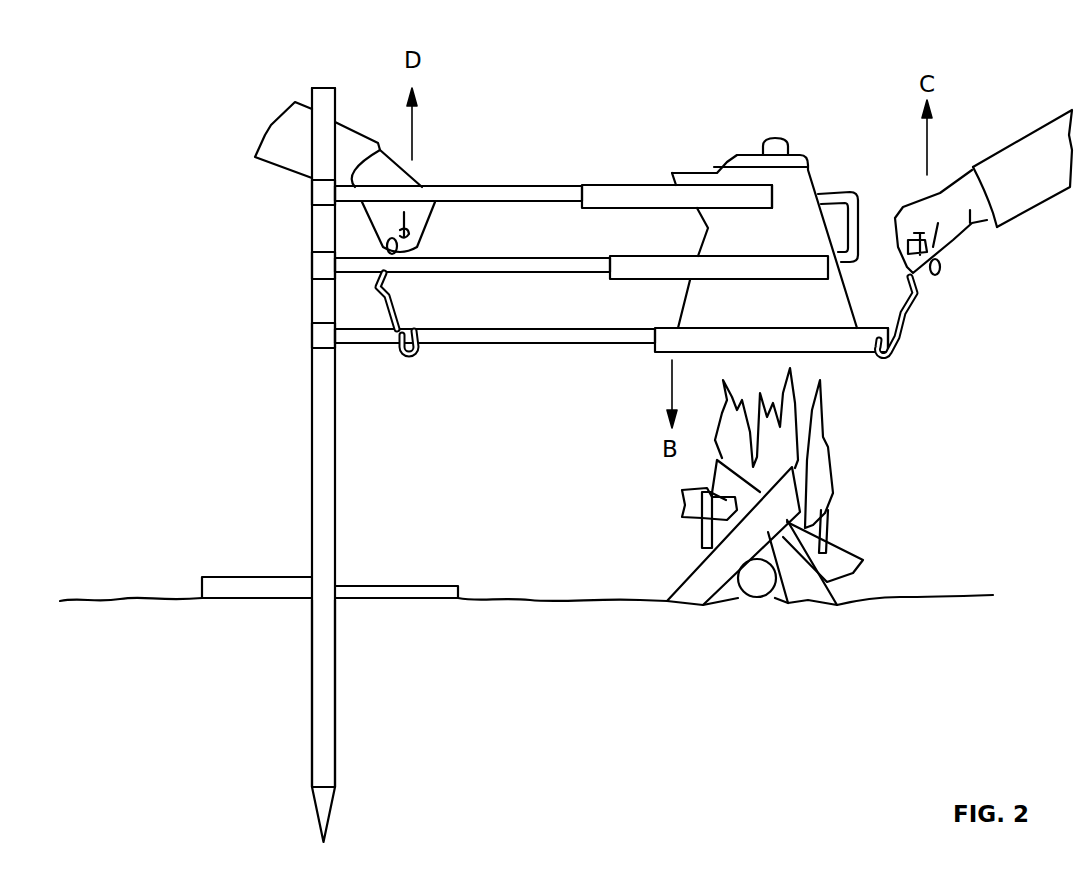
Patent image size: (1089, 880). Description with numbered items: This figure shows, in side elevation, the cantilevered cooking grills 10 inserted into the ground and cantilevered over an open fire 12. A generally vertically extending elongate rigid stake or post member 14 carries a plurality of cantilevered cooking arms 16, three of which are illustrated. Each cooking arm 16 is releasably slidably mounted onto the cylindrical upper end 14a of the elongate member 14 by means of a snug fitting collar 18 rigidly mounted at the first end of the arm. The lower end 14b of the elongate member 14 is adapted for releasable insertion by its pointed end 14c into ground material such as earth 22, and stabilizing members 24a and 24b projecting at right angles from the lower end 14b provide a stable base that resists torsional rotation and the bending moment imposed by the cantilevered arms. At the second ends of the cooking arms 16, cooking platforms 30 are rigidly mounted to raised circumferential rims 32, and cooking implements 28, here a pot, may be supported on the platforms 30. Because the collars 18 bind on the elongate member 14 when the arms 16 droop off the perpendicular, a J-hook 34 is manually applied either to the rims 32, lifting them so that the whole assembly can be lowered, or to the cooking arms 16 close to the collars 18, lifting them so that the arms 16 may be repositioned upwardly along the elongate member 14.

The cantilevered cooking grills 10 is at (507, 88).
The open fire 12 is at (860, 472).
The elongate member 14 is at (297, 452).
The upper end 14a is at (326, 86).
The lower end 14b is at (338, 718).
The pointed end 14c is at (335, 808).
The cantilevered cooking arms 16 is at (483, 183).
The collar 18 is at (315, 265).
The earth 22 is at (622, 702).
The stabilizing member 24a is at (253, 577).
The stabilizing member 24b is at (423, 582).
The cooking implements 28 is at (808, 155).
The cooking platforms 30 is at (595, 183).
The circumferential rims 32 is at (773, 188).
The J-hook 34 is at (395, 298).